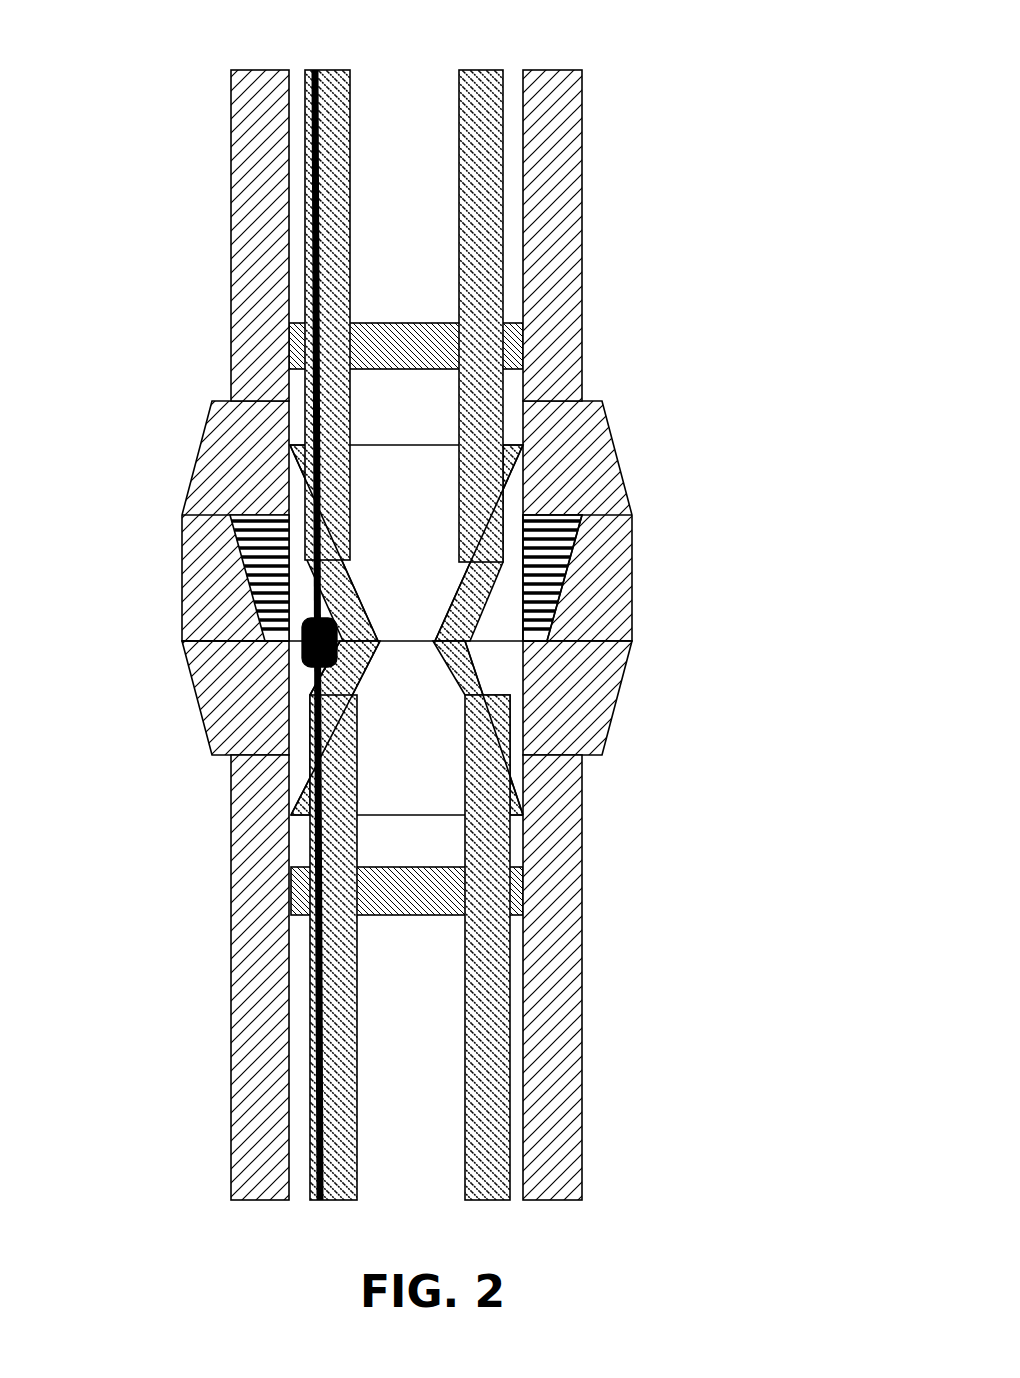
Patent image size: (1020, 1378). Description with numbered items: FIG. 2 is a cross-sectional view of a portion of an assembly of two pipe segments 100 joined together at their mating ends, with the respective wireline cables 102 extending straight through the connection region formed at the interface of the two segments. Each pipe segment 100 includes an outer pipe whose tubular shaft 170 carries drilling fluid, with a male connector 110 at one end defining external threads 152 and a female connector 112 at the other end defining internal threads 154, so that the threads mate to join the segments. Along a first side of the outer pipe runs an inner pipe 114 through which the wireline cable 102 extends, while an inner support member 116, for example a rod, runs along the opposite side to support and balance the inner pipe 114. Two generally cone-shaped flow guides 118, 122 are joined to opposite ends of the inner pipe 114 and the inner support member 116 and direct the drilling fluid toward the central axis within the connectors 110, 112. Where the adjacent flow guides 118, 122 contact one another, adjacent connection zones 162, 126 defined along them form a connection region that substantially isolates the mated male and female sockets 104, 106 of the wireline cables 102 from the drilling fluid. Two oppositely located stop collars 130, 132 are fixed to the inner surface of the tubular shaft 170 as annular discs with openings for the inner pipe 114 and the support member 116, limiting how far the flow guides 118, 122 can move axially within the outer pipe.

The pipe segment 100 is at (702, 241).
The wireline cable 102 is at (312, 162).
The male socket 104 is at (305, 630).
The female socket 106 is at (300, 657).
The male connector 110 is at (613, 726).
The female connector 112 is at (207, 433).
The inner pipe 114 is at (350, 112).
The inner support member 116 is at (499, 228).
The flow guide 118 is at (487, 683).
The flow guide 122 is at (511, 502).
The connection zone 126 is at (300, 692).
The stop collar 130 is at (513, 892).
The stop collar 132 is at (510, 343).
The external threads 152 is at (566, 582).
The internal threads 154 is at (552, 578).
The connection zone 162 is at (307, 578).
The tubular shaft 170 is at (582, 137).